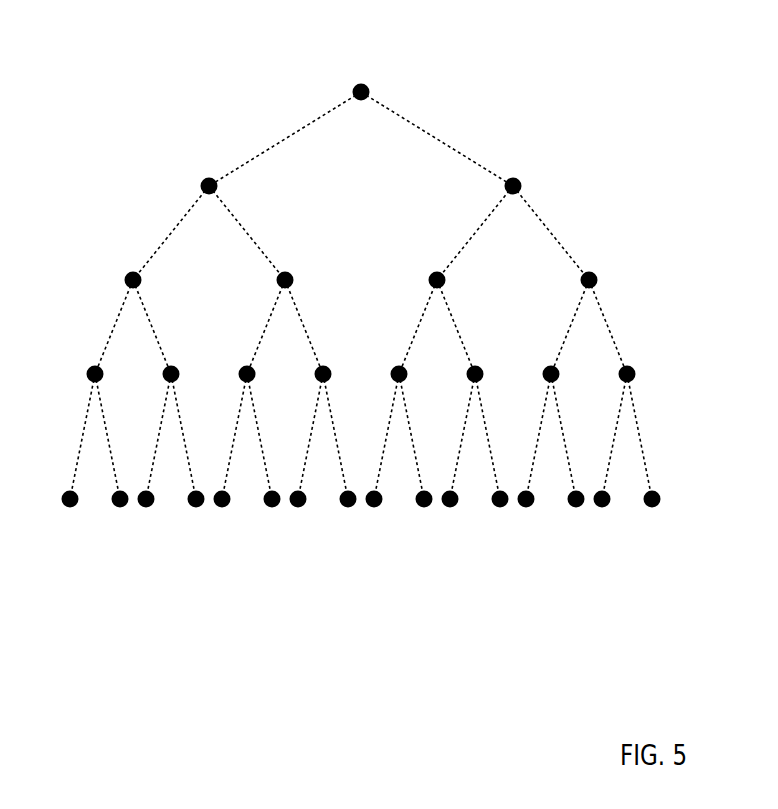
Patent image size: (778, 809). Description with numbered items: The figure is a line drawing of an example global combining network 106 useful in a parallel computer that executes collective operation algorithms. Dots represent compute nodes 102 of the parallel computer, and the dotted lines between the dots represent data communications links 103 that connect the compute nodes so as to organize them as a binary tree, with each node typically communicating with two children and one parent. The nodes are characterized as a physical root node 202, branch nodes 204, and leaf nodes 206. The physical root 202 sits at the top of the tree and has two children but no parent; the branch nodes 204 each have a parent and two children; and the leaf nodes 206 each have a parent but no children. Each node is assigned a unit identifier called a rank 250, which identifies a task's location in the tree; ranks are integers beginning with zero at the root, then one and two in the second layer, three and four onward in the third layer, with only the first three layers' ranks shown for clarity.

The compute nodes 102 is at (410, 364).
The data communications links 103 is at (292, 134).
The global combining network 106 is at (388, 364).
The physical root node 202 is at (376, 81).
The branch nodes 204 is at (670, 143).
The leaf nodes 206 is at (424, 508).
The rank 250 is at (482, 193).